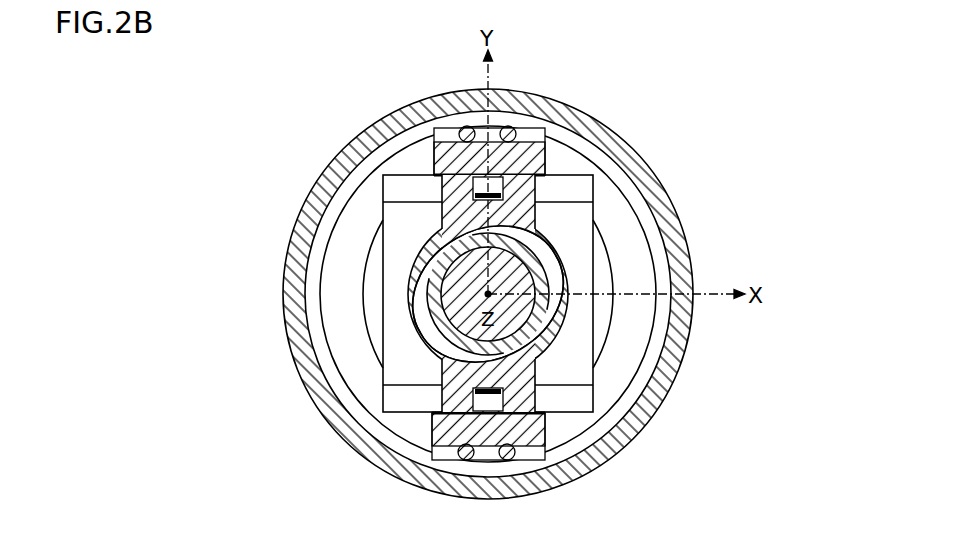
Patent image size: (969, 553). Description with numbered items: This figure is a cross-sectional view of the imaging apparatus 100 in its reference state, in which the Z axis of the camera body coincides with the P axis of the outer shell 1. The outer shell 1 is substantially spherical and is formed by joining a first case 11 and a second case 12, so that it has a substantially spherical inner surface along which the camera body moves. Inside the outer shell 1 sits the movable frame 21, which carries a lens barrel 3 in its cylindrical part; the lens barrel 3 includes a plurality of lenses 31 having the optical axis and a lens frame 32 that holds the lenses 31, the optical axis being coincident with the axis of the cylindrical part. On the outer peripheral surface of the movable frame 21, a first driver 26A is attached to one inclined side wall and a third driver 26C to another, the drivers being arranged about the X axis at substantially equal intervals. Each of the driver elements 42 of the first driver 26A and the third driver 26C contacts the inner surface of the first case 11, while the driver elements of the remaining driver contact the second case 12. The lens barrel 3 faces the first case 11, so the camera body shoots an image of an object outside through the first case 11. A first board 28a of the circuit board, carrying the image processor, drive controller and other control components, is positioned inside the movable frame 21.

The imaging apparatus 100 is at (740, 128).
The outer shell 1 is at (641, 156).
The first case 11 is at (587, 112).
The second case 12 is at (337, 277).
The movable frame 21 is at (381, 395).
The first driver 26A is at (428, 157).
The third driver 26C is at (428, 430).
The first board 28a is at (613, 262).
The lens barrel 3 is at (428, 263).
The lenses 31 is at (441, 292).
The lens frame 32 is at (418, 312).
The driver elements 42 is at (465, 126).